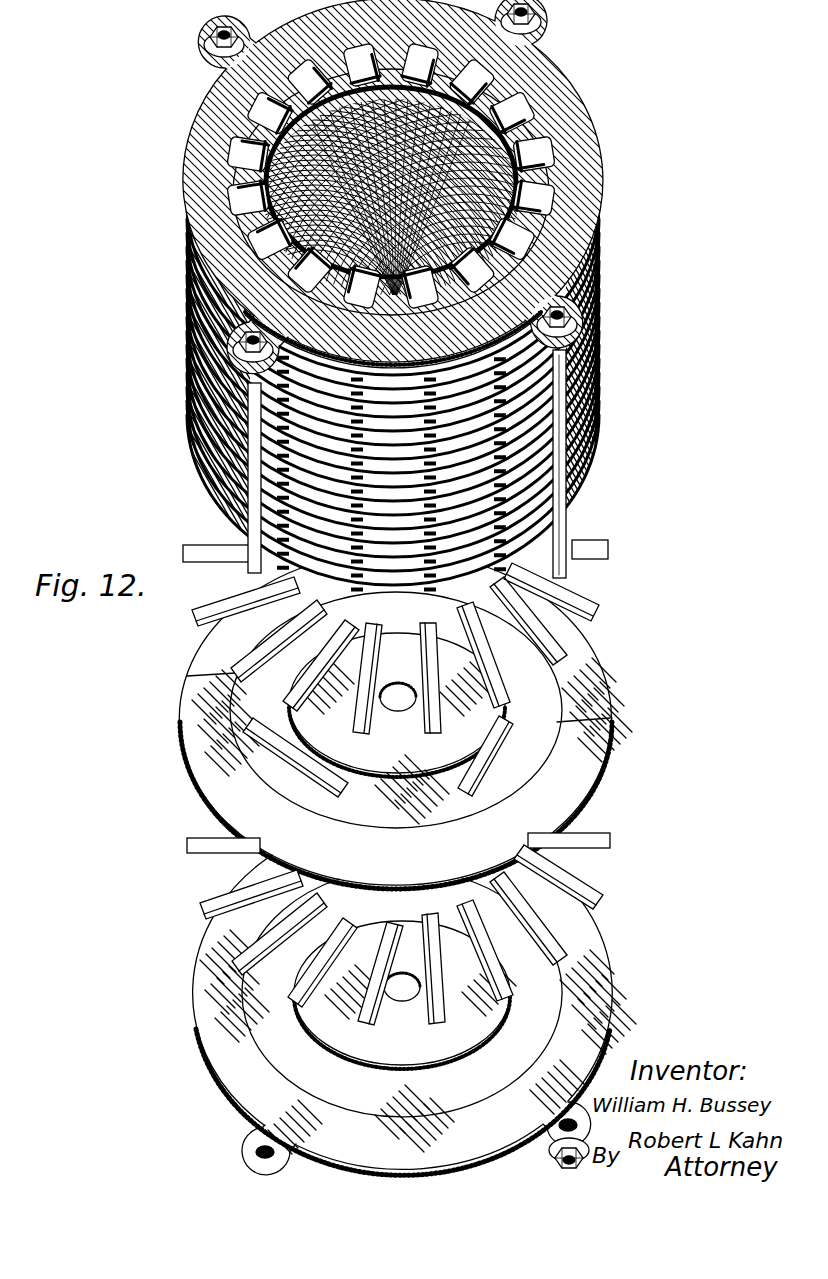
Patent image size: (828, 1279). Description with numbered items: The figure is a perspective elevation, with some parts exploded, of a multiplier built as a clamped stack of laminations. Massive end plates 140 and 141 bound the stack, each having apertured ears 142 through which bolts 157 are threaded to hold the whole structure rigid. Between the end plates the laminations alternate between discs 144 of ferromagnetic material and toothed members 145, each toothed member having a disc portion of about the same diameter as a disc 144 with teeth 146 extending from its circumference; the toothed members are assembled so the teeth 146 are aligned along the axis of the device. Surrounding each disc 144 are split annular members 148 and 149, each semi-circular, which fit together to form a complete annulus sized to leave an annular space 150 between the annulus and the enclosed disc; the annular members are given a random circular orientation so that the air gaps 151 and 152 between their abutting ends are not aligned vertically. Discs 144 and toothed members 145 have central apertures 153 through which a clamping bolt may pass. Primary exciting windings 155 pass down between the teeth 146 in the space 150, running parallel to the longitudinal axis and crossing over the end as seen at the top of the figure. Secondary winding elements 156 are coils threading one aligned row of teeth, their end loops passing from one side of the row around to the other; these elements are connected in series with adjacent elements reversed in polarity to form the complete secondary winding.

The end plate 140 is at (598, 180).
The end plate 141 is at (612, 968).
The apertured ears 142 is at (255, 1152).
The disc 144 is at (399, 851).
The toothed member 145 is at (398, 810).
The teeth 146 is at (226, 508).
The split annular member 148 is at (203, 386).
The split annular member 149 is at (396, 805).
The annular space 150 is at (575, 710).
The air gap 151 is at (610, 718).
The air gap 152 is at (268, 432).
The central aperture 153 is at (400, 842).
The primary exciting windings 155 is at (560, 95).
The secondary winding element 156 is at (560, 232).
The bolts 157 is at (566, 513).